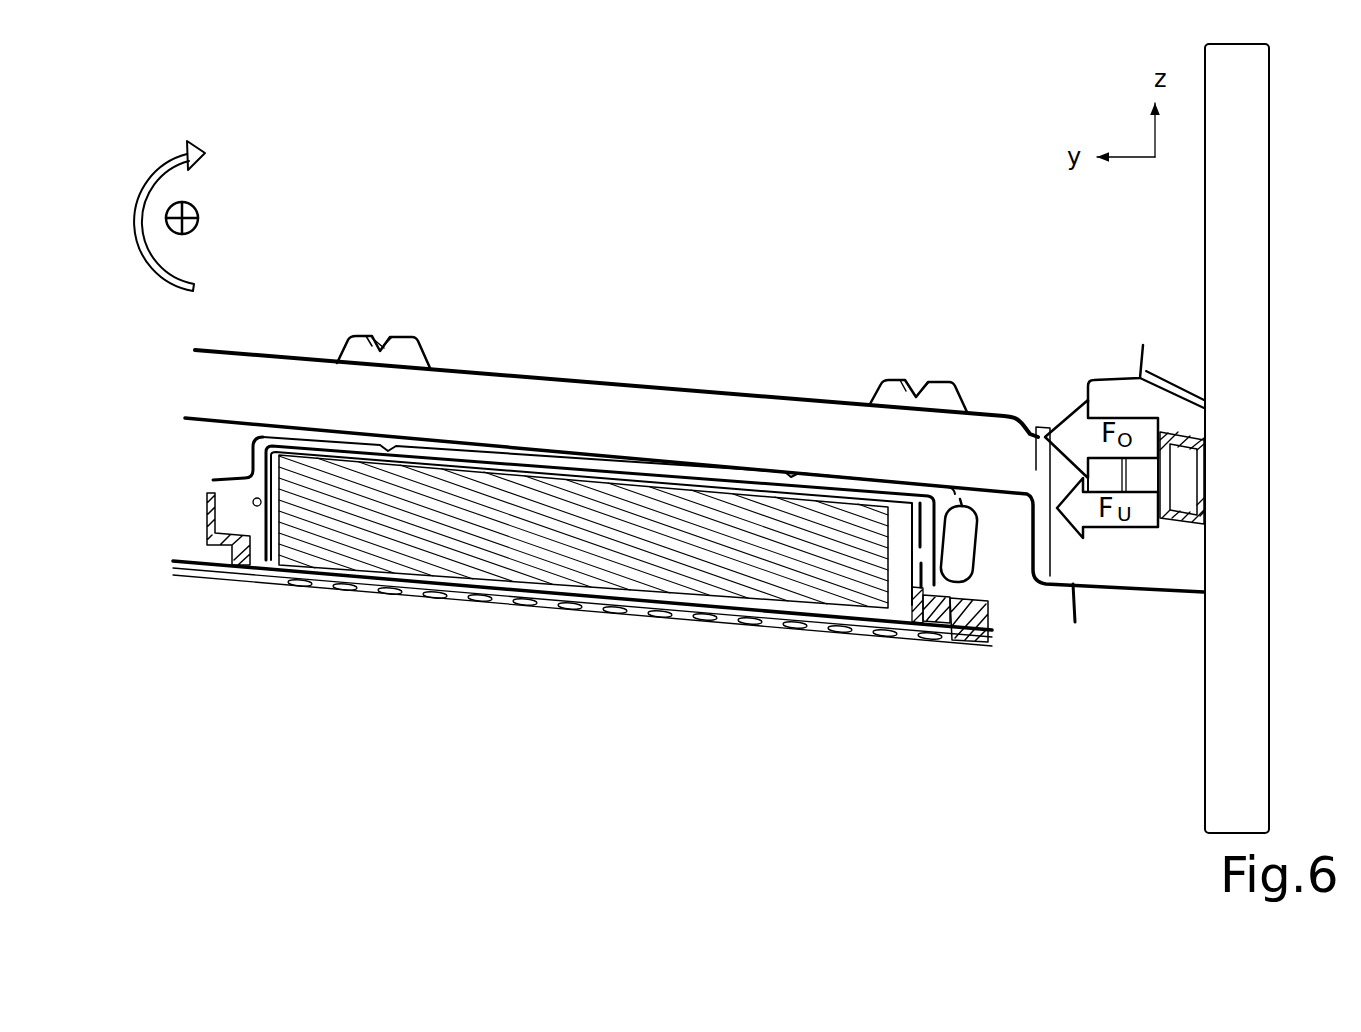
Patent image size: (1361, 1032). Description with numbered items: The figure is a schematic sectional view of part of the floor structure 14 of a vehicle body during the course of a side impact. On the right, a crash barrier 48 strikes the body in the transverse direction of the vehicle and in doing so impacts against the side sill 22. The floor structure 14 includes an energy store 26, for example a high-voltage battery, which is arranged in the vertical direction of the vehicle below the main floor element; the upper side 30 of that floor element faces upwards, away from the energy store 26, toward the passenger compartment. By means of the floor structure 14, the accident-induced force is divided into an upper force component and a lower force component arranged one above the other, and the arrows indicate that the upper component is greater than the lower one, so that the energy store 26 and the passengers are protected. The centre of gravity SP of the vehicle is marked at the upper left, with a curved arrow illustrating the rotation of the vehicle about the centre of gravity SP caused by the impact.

The floor structure 14 is at (739, 389).
The side sill 22 is at (1168, 527).
The energy store 26 is at (598, 572).
The upper side 30 is at (567, 382).
The crash barrier 48 is at (1223, 203).
The centre of gravity SP is at (199, 215).